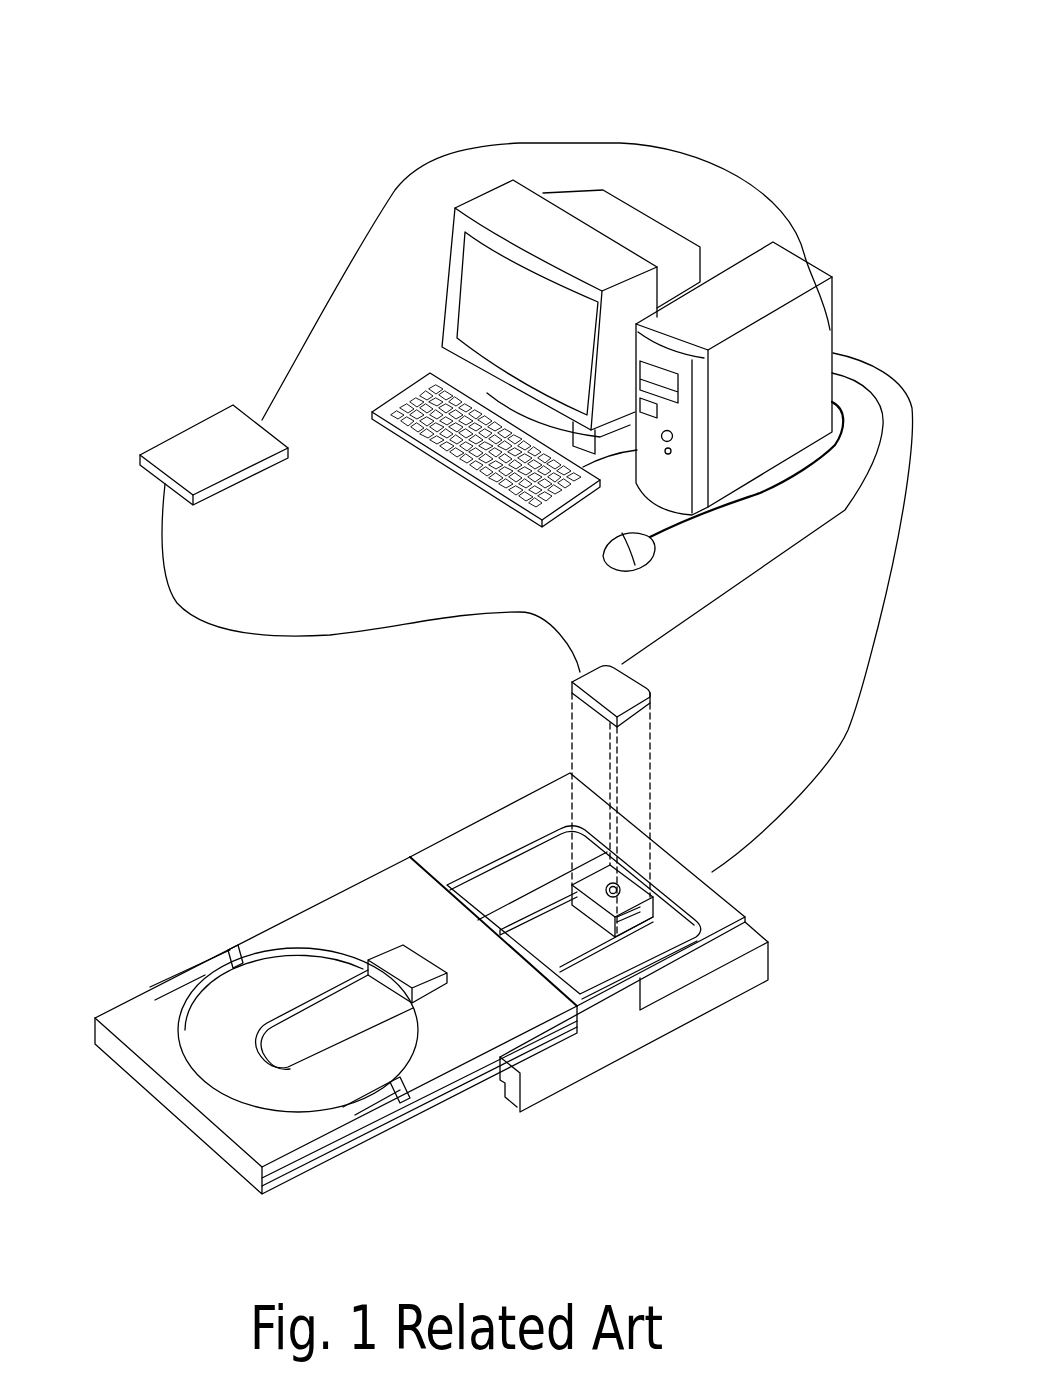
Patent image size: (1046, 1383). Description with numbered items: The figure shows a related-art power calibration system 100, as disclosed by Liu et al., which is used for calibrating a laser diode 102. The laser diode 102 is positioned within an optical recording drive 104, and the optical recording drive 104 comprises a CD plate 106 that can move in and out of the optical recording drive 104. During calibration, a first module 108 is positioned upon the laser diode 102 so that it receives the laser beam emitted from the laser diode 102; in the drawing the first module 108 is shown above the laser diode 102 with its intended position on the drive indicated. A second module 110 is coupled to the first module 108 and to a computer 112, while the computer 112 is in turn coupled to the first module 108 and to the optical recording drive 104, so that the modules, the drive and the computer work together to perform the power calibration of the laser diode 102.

The power calibration system 100 is at (205, 80).
The laser diode 102 is at (614, 887).
The optical recording drive 104 is at (627, 1035).
The CD plate 106 is at (157, 1077).
The first module 108 is at (598, 686).
The second module 110 is at (195, 445).
The computer 112 is at (694, 188).